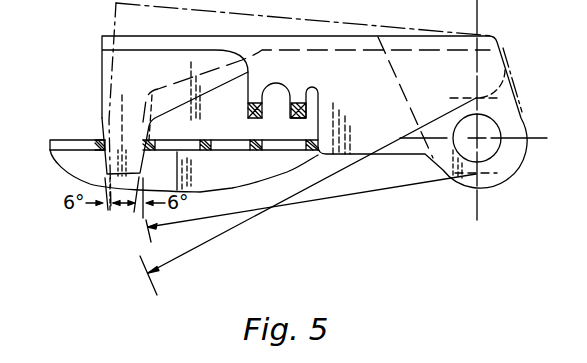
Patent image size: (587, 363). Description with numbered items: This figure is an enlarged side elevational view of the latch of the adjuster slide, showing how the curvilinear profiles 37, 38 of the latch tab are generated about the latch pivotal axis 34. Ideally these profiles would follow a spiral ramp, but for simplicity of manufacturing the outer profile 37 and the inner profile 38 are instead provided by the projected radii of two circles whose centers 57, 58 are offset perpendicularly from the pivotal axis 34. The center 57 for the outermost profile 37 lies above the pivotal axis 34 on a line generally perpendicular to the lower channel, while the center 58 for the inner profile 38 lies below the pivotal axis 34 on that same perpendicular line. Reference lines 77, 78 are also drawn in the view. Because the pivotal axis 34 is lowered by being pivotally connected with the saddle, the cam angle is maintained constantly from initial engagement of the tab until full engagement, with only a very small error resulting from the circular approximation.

The outer curvilinear profile 37 is at (87, 162).
The inner curvilinear profile 38 is at (87, 162).
The latch pivotal axis 34 is at (477, 138).
The center of outer profile circle 57 is at (505, 70).
The center of inner profile circle 58 is at (476, 174).
The reference line 77 is at (190, 258).
The reference line 78 is at (173, 230).